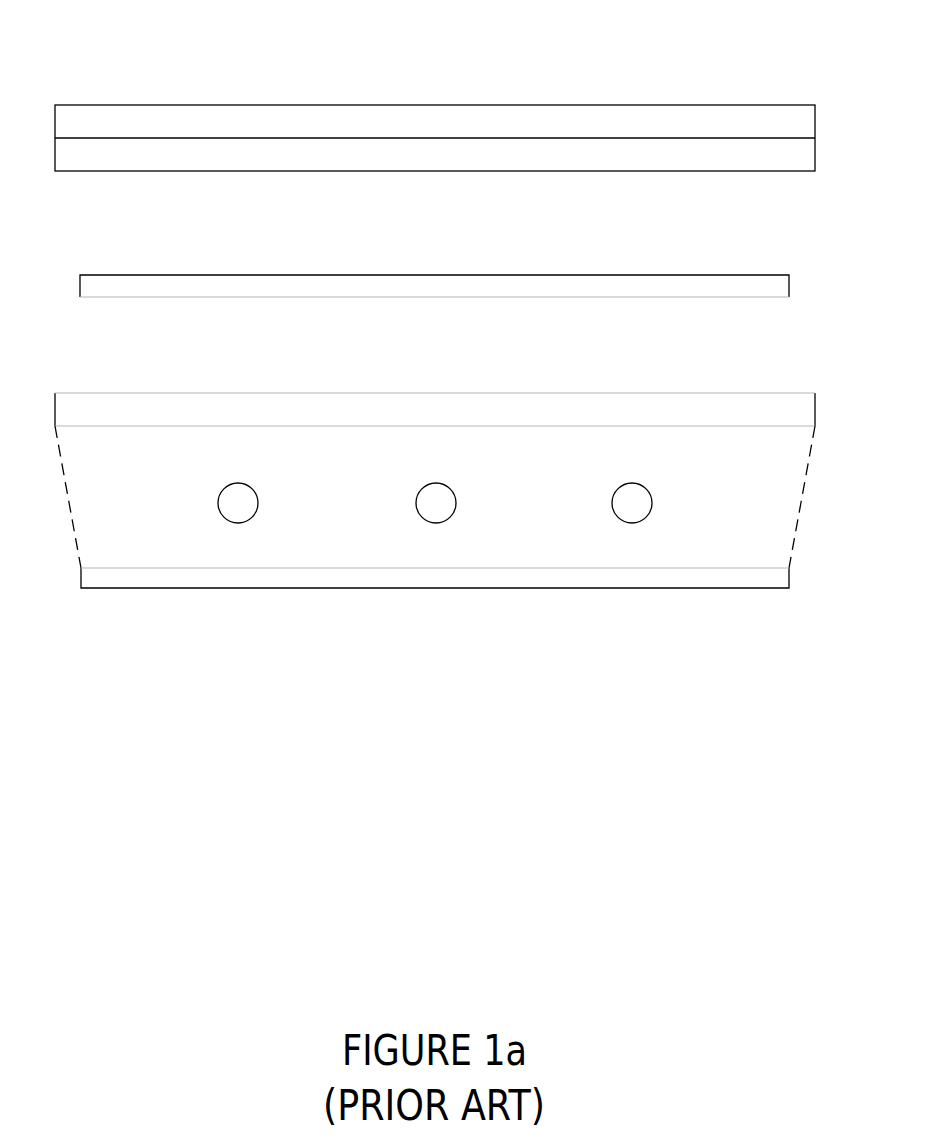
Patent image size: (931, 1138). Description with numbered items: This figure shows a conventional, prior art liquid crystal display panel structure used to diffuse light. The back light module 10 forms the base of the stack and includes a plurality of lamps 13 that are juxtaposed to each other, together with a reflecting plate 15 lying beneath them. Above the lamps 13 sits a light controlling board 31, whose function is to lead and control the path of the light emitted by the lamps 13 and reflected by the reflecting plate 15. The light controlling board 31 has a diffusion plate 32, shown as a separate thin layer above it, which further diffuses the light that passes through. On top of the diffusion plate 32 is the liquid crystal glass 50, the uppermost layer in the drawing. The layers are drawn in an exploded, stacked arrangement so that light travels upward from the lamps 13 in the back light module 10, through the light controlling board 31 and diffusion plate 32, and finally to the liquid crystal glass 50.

The liquid crystal glass 50 is at (631, 122).
The diffusion plate 32 is at (631, 283).
The light controlling board 31 is at (636, 412).
The back light module 10 is at (443, 564).
The reflecting plate 15 is at (542, 578).
The lamps 13 is at (632, 503).